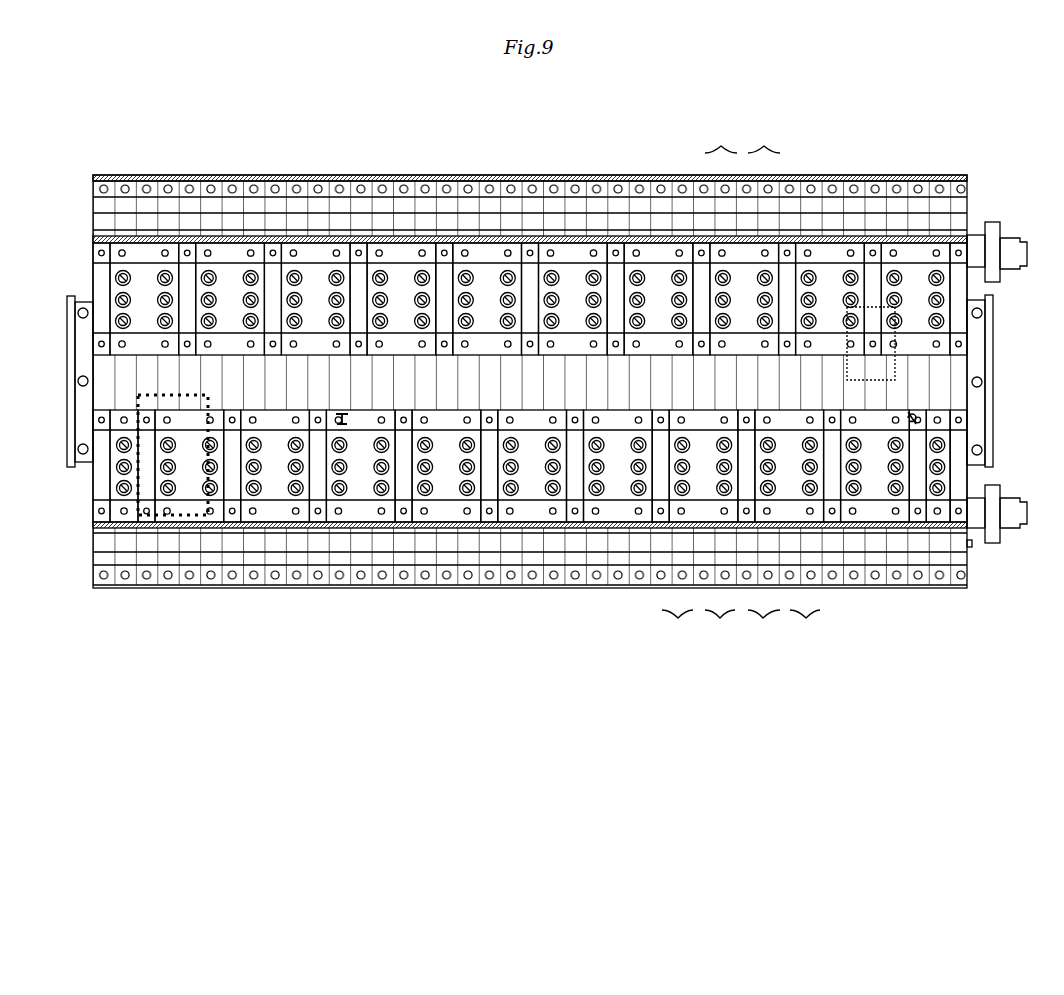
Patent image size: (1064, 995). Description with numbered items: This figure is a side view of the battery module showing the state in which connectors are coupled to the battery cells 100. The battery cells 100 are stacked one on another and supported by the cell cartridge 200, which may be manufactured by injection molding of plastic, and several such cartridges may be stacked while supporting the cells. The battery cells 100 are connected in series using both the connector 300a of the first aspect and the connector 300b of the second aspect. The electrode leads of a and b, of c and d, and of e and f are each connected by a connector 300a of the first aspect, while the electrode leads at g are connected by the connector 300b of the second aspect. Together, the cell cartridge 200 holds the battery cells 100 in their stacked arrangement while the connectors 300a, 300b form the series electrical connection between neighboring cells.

The battery cells 100 is at (279, 133).
The cell cartridge 200 is at (957, 175).
The connector of the first aspect 300a is at (745, 283).
The connector of the second aspect 300b is at (115, 480).